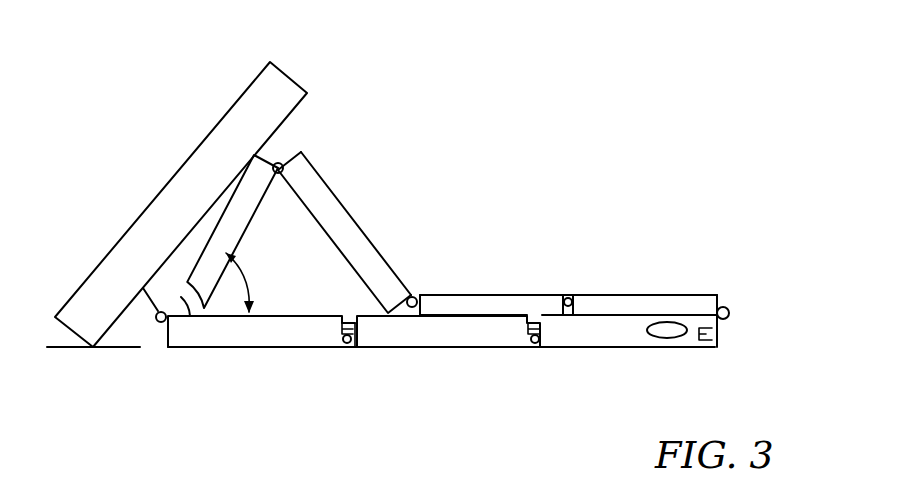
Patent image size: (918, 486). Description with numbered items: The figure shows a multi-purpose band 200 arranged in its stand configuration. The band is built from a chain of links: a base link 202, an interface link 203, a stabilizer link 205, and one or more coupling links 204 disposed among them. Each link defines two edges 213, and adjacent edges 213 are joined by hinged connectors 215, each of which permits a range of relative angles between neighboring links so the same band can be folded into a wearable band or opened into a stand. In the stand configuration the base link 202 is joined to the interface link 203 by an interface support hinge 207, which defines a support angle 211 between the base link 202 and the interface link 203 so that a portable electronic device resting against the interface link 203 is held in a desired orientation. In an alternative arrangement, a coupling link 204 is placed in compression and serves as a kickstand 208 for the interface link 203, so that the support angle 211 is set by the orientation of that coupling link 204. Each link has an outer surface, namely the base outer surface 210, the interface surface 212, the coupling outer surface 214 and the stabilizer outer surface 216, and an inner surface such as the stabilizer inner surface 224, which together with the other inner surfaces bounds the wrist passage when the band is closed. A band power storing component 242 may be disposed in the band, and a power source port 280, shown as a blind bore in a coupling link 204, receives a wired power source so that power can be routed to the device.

The multi-purpose band 200 is at (438, 262).
The base link 202 is at (268, 333).
The interface link 203 is at (250, 183).
The coupling link 204 is at (504, 296).
The stabilizer link 205 is at (462, 333).
The interface support hinge 207 is at (160, 322).
The kickstand 208 is at (372, 263).
The base outer surface 210 is at (237, 348).
The support angle 211 is at (243, 279).
The interface surface 212 is at (195, 223).
The edge 213 is at (348, 343).
The coupling outer surface 214 is at (337, 192).
The hinged connector 215 is at (282, 166).
The stabilizer outer surface 216 is at (441, 348).
The stabilizer inner surface 224 is at (325, 238).
The band power storing component 242 is at (668, 332).
The power source port 280 is at (715, 337).